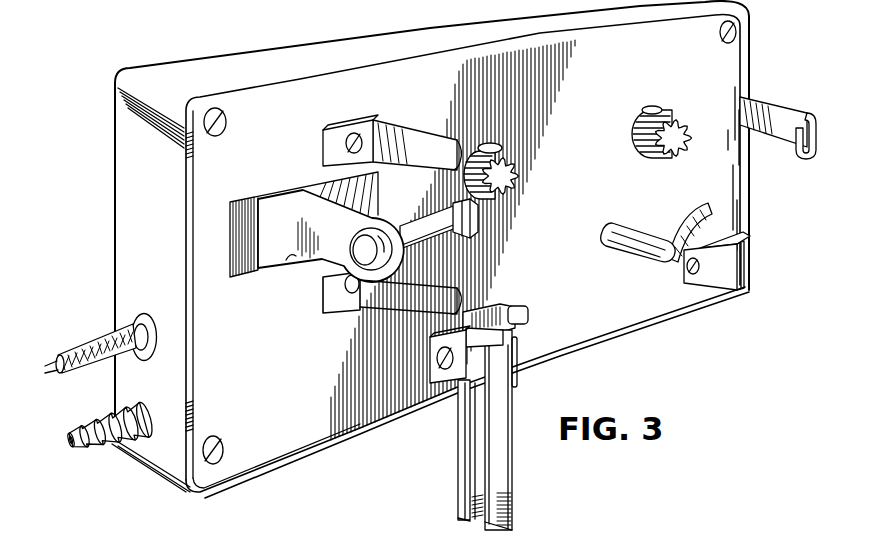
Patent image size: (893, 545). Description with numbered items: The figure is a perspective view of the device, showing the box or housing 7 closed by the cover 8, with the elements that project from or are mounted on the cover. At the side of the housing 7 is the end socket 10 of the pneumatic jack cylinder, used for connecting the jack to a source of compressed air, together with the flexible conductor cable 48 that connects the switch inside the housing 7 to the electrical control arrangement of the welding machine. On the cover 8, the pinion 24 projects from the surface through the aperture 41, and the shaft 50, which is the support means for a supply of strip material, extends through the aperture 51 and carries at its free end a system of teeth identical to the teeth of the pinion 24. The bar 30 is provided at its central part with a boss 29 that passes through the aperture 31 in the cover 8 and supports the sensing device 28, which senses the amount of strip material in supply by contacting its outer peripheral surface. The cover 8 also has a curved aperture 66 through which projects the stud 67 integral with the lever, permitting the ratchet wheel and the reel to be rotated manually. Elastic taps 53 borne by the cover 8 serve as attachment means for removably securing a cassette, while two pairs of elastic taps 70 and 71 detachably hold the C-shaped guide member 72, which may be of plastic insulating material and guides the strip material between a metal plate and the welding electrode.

The housing 7 is at (210, 46).
The cover 8 is at (622, 298).
The end socket 10 is at (90, 445).
The pinion 24 is at (667, 121).
The sensing device 28 is at (453, 240).
The boss 29 is at (323, 238).
The bar 30 is at (277, 240).
The aperture 31 is at (250, 210).
The aperture 41 is at (650, 107).
The flexible conductor cable 48 is at (92, 350).
The shaft 50 is at (510, 185).
The aperture 51 is at (500, 148).
The elastic taps 53 is at (425, 150).
The curved aperture 66 is at (673, 233).
The stud 67 is at (640, 238).
The elastic taps 70 is at (478, 370).
The elastic taps 71 is at (723, 270).
The C-shaped guide member 72 is at (458, 456).